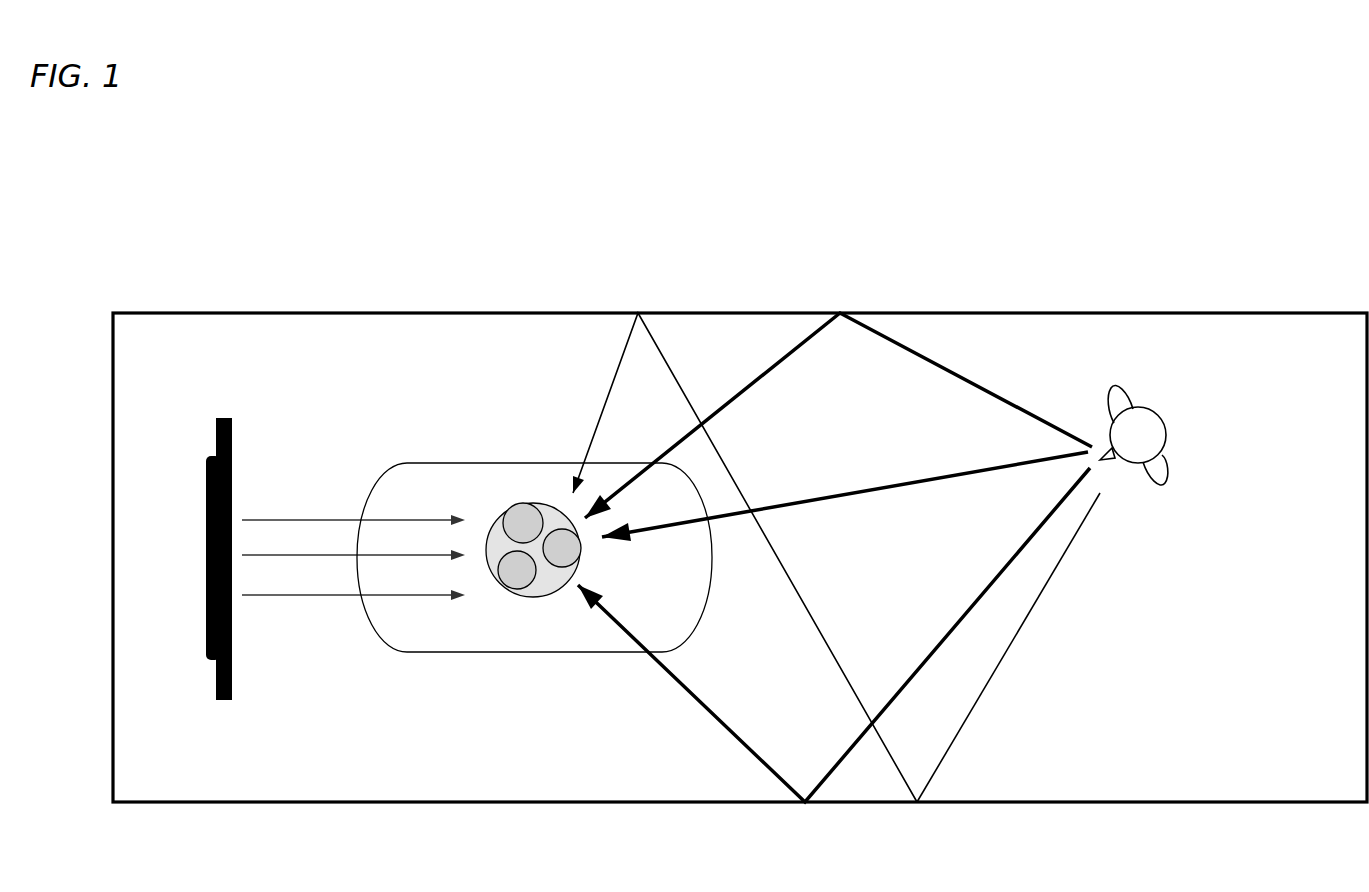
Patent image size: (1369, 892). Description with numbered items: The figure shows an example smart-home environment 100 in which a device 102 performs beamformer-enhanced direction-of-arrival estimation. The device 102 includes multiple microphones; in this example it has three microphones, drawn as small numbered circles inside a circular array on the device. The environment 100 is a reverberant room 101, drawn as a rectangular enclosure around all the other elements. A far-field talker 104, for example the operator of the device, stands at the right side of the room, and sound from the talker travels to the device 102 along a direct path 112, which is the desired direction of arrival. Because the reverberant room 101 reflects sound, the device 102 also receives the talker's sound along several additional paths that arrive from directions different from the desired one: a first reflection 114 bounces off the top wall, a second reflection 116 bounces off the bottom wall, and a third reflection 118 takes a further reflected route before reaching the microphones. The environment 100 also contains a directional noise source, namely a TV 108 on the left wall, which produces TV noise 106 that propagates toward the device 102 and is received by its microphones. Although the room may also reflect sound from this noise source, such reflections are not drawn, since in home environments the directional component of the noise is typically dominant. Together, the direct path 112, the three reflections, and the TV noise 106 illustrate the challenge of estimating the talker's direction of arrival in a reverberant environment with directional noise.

The smart-home environment 100 is at (1299, 141).
The reverberant room 101 is at (750, 312).
The device 102 is at (540, 503).
The far-field talker 104 is at (1146, 408).
The TV noise 106 is at (262, 597).
The TV 108 is at (226, 418).
The direct path 112 is at (800, 504).
The reflection 1 114 is at (745, 392).
The reflection 2 116 is at (727, 730).
The reflection 3 118 is at (620, 366).